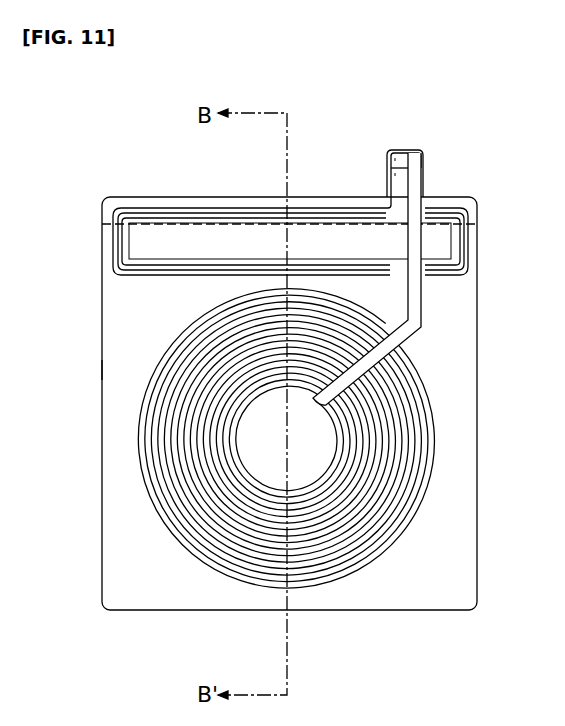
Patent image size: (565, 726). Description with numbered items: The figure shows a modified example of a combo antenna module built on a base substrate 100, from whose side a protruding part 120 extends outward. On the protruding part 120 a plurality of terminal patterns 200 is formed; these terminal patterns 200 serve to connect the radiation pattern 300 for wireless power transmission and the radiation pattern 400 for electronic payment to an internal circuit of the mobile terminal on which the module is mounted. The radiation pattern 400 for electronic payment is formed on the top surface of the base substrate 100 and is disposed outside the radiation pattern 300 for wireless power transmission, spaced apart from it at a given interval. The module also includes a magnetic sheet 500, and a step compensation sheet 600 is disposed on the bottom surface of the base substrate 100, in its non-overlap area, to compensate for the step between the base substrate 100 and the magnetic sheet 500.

The base substrate 100 is at (101, 300).
The protruding part 120 is at (402, 150).
The terminal pattern 200 is at (417, 160).
The radiation pattern for wireless power transmission 300 is at (440, 437).
The radiation pattern for electronic payment 400 is at (223, 207).
The magnetic sheet 500 is at (112, 359).
The step compensation sheet 600 is at (101, 220).